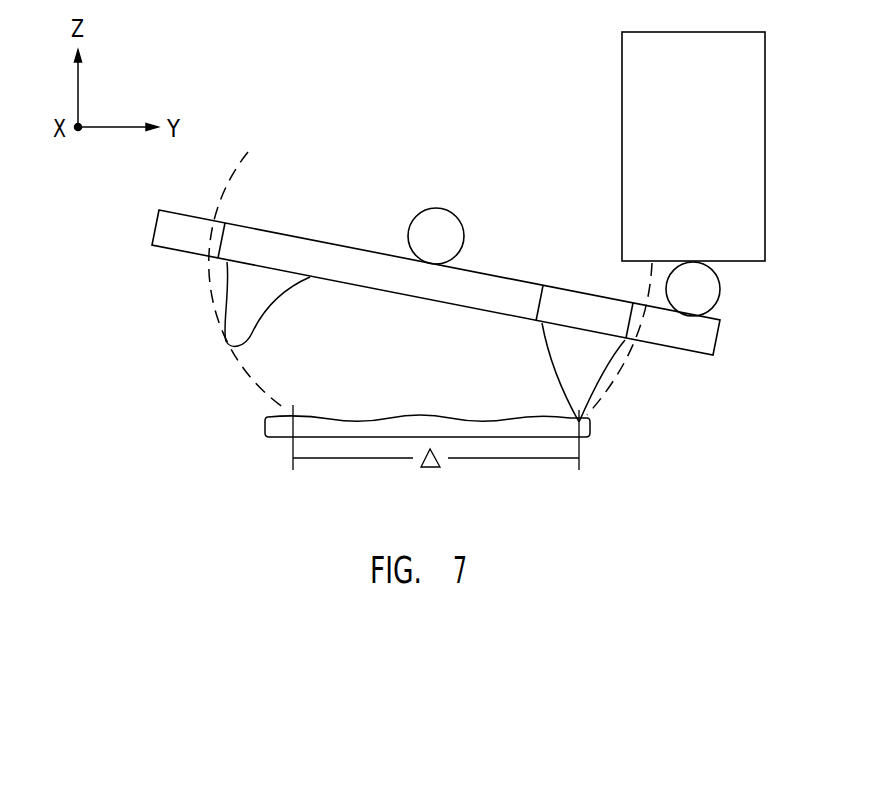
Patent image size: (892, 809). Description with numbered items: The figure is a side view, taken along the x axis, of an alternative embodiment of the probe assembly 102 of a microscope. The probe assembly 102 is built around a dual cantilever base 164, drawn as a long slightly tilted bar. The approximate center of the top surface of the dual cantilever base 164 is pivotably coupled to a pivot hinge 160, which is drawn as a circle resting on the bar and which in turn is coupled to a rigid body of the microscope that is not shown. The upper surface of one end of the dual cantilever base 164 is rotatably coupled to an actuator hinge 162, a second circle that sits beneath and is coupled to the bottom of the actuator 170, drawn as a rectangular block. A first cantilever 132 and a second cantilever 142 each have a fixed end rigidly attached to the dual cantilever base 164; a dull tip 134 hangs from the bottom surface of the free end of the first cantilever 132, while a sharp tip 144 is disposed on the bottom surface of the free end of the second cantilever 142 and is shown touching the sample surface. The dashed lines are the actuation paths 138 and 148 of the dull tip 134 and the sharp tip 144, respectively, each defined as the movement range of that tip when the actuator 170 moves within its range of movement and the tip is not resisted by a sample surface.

The probe assembly 102 is at (490, 58).
The first cantilever 132 is at (268, 245).
The dull tip 134 is at (240, 292).
The actuation path 138 is at (242, 166).
The second cantilever 142 is at (578, 302).
The sharp tip 144 is at (582, 377).
The actuation path 148 is at (630, 353).
The pivot hinge 160 is at (443, 226).
The actuator hinge 162 is at (707, 292).
The dual cantilever base 164 is at (167, 233).
The actuator 170 is at (714, 138).